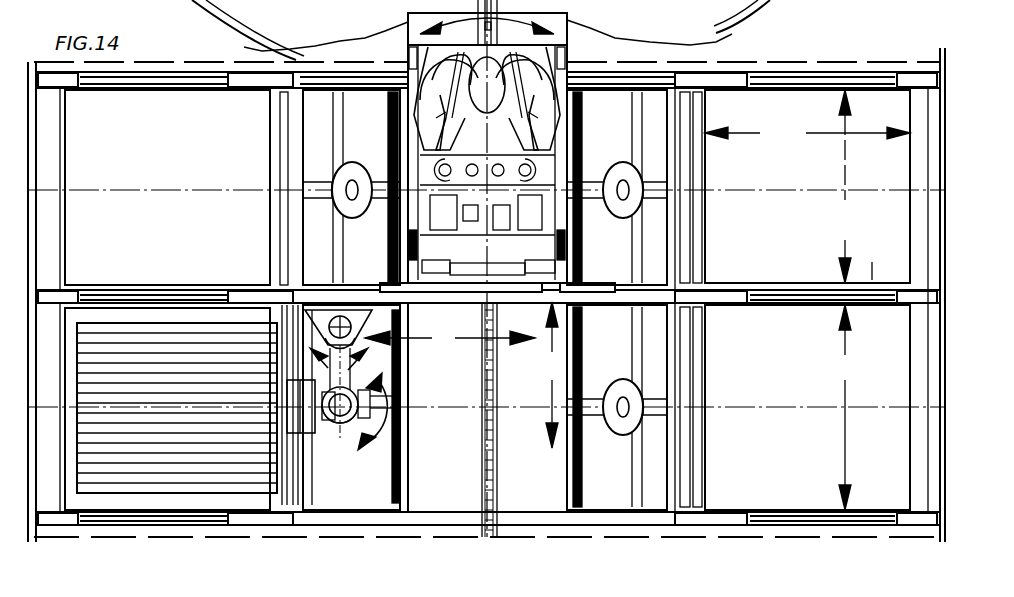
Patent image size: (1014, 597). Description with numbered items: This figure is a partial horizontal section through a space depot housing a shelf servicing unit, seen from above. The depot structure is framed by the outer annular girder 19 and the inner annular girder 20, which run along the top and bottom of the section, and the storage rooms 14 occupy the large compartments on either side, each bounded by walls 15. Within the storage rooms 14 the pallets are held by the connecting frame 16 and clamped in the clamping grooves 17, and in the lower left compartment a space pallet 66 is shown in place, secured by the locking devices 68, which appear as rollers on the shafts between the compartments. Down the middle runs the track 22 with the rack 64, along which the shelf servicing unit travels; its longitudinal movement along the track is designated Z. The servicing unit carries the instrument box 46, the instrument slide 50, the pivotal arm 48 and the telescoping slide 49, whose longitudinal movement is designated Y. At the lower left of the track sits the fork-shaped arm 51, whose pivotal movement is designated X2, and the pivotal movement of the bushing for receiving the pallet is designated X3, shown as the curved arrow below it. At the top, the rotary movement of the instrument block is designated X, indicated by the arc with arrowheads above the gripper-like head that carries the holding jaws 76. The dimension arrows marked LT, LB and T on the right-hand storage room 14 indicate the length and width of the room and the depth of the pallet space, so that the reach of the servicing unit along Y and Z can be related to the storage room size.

The storage room 14 is at (816, 300).
The wall 15 is at (910, 252).
The connecting frame 16 is at (582, 127).
The clamping groove 17 is at (686, 218).
The outer annular girder 19 is at (62, 84).
The inner annular girder 20 is at (258, 90).
The track 22 is at (487, 236).
The instrument box 46 is at (428, 233).
The pivotal arm 48 is at (602, 292).
The telescoping slide 49 is at (462, 300).
The instrument slide 50 is at (368, 292).
The fork-shaped arm 51 is at (346, 380).
The rack 64 is at (486, 461).
The space pallet 66 is at (228, 357).
The locking device 68 is at (340, 203).
The holding jaw 76 is at (596, 195).
The rotary movement of instrument block X is at (505, 34).
The pivotal movement of fork-shaped arm X2 is at (366, 352).
The pivotal movement of bushing X3 is at (358, 426).
The longitudinal movement of telescoping slide Y is at (450, 339).
The longitudinal movement of shelf servicing unit Z is at (550, 375).
The dimension LT is at (807, 133).
The dimension LB is at (835, 186).
The dimension T is at (844, 407).